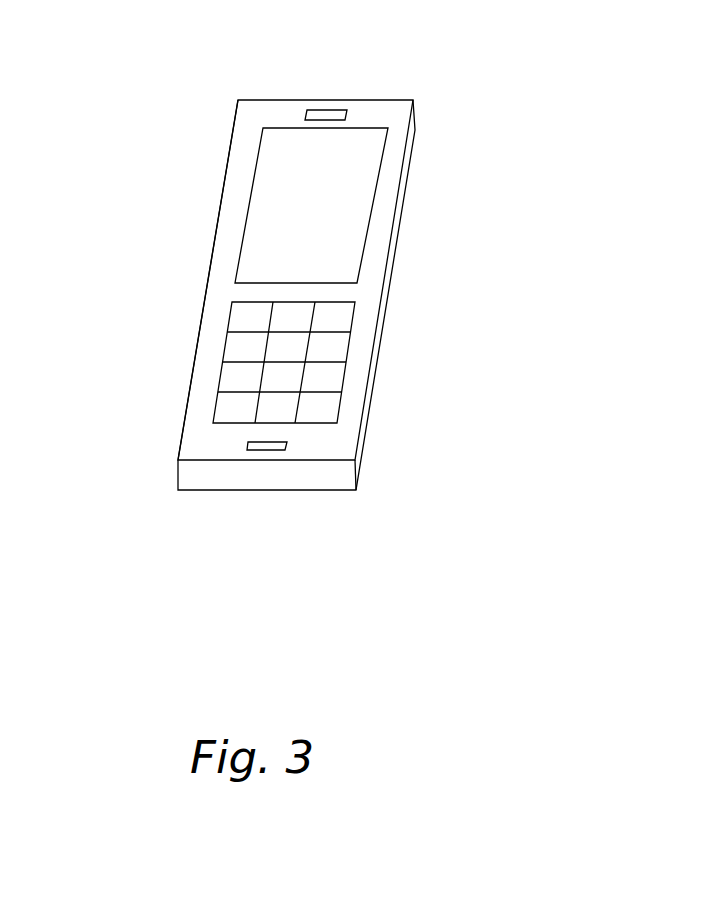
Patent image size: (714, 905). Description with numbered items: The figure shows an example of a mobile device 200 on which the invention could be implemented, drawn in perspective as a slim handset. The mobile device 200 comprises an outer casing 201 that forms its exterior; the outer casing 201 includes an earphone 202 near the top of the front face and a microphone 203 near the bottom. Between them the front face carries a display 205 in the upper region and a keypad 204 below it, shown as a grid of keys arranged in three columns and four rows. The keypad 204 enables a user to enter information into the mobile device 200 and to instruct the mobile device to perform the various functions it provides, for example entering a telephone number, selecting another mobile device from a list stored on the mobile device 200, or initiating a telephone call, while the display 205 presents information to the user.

The mobile device 200 is at (185, 150).
The outer casing 201 is at (203, 303).
The earphone 202 is at (333, 110).
The microphone 203 is at (277, 448).
The keypad 204 is at (350, 347).
The display 205 is at (375, 197).